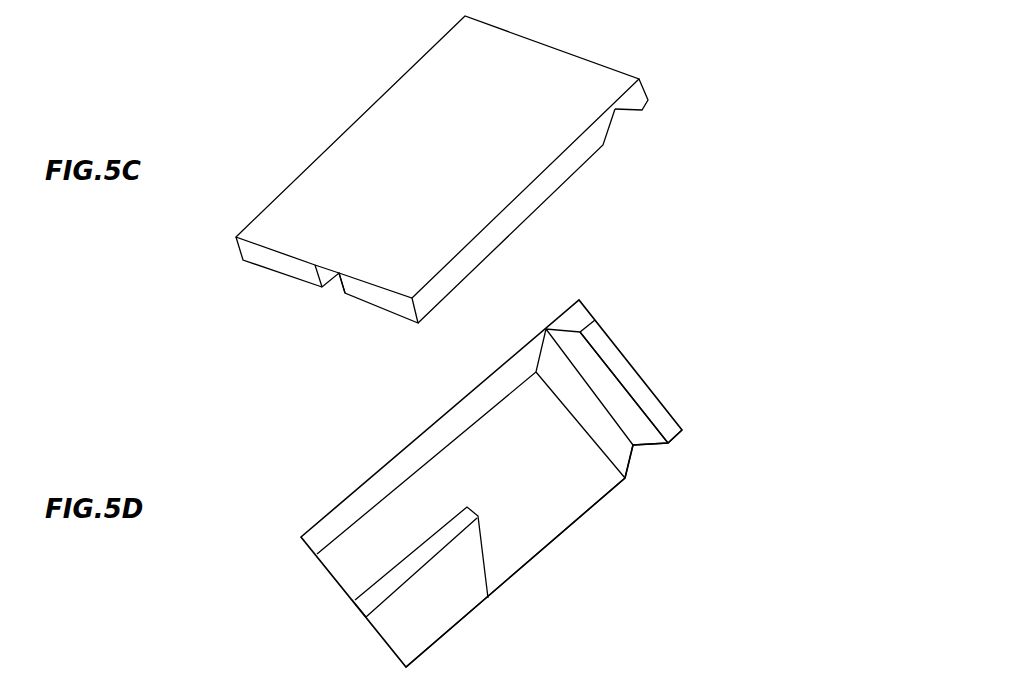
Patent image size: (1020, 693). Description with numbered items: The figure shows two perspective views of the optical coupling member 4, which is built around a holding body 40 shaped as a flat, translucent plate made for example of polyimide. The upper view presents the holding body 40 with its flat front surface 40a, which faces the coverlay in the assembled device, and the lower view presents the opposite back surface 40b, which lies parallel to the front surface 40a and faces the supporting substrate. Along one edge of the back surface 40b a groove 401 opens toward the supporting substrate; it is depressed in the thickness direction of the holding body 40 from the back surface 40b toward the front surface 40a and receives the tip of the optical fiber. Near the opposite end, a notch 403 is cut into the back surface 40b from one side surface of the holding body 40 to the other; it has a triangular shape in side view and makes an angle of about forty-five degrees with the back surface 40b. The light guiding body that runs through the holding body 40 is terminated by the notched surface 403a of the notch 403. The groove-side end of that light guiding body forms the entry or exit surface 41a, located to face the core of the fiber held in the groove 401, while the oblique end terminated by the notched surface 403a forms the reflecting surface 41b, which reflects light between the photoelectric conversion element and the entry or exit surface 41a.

In FIG. 5C, the optical coupling member 4 is at (370, 40).
In FIG. 5D, the optical coupling member 4 is at (683, 364).
In FIG. 5C, the holding body 40 is at (429, 50).
In FIG. 5D, the holding body 40 is at (426, 441).
In FIG. 5C, the front surface 40a is at (358, 157).
In FIG. 5C, the back surface 40b is at (517, 224).
In FIG. 5D, the back surface 40b is at (528, 542).
In FIG. 5C, the groove 401 is at (328, 298).
In FIG. 5D, the groove 401 is at (351, 621).
In FIG. 5C, the notch 403 is at (626, 131).
In FIG. 5D, the notch 403 is at (659, 448).
In FIG. 5D, the notched surface 403a is at (620, 453).
In FIG. 5D, the entry or exit surface 41a is at (478, 515).
In FIG. 5D, the reflecting surface 41b is at (582, 403).